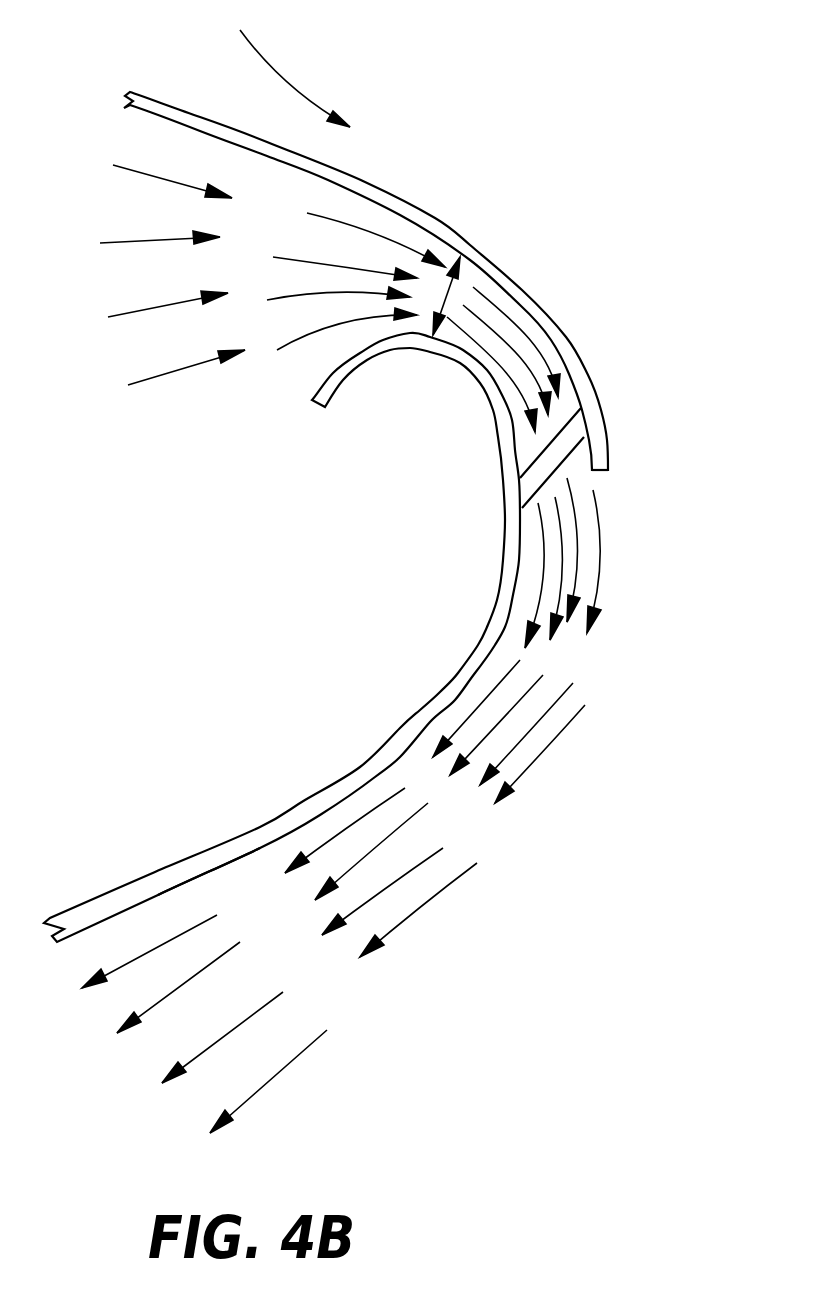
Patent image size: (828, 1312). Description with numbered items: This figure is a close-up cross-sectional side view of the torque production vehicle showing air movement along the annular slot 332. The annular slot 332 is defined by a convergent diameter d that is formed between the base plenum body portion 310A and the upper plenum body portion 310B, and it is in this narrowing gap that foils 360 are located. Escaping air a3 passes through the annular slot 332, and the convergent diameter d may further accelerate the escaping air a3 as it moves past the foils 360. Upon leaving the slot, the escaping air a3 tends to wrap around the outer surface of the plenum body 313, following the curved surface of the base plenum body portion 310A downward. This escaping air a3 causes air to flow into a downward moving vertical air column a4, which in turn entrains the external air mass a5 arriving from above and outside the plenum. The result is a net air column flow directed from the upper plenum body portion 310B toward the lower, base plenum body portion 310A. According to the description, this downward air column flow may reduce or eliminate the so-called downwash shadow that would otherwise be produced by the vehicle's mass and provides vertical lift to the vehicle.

The upper plenum body portion 310B is at (522, 290).
The base plenum body portion 310A is at (503, 540).
The foils 360 is at (547, 462).
The annular slot 332 is at (585, 478).
The plenum body 313 is at (228, 866).
The convergent diameter d is at (453, 301).
The external air mass a5 is at (330, 220).
The escaping air a3 is at (598, 580).
The downward moving vertical air column a4 is at (302, 1053).